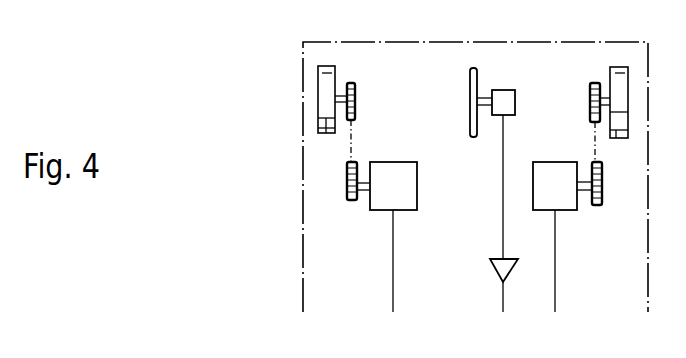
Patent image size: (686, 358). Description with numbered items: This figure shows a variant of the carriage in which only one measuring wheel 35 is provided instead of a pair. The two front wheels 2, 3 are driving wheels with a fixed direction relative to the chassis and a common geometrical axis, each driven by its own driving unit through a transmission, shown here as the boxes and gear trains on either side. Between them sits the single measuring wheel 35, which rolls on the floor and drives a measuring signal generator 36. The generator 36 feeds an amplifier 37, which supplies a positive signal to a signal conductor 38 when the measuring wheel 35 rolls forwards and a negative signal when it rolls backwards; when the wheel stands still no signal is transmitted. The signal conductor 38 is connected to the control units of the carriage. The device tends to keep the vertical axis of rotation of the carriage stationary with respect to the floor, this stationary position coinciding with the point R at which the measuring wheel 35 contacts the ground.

The front wheel 2 is at (325, 133).
The front wheel 3 is at (620, 138).
The measuring wheel 35 is at (470, 76).
The measuring signal generator 36 is at (515, 103).
The amplifier 37 is at (497, 268).
The signal conductor 38 is at (503, 303).
The contact point R is at (470, 100).